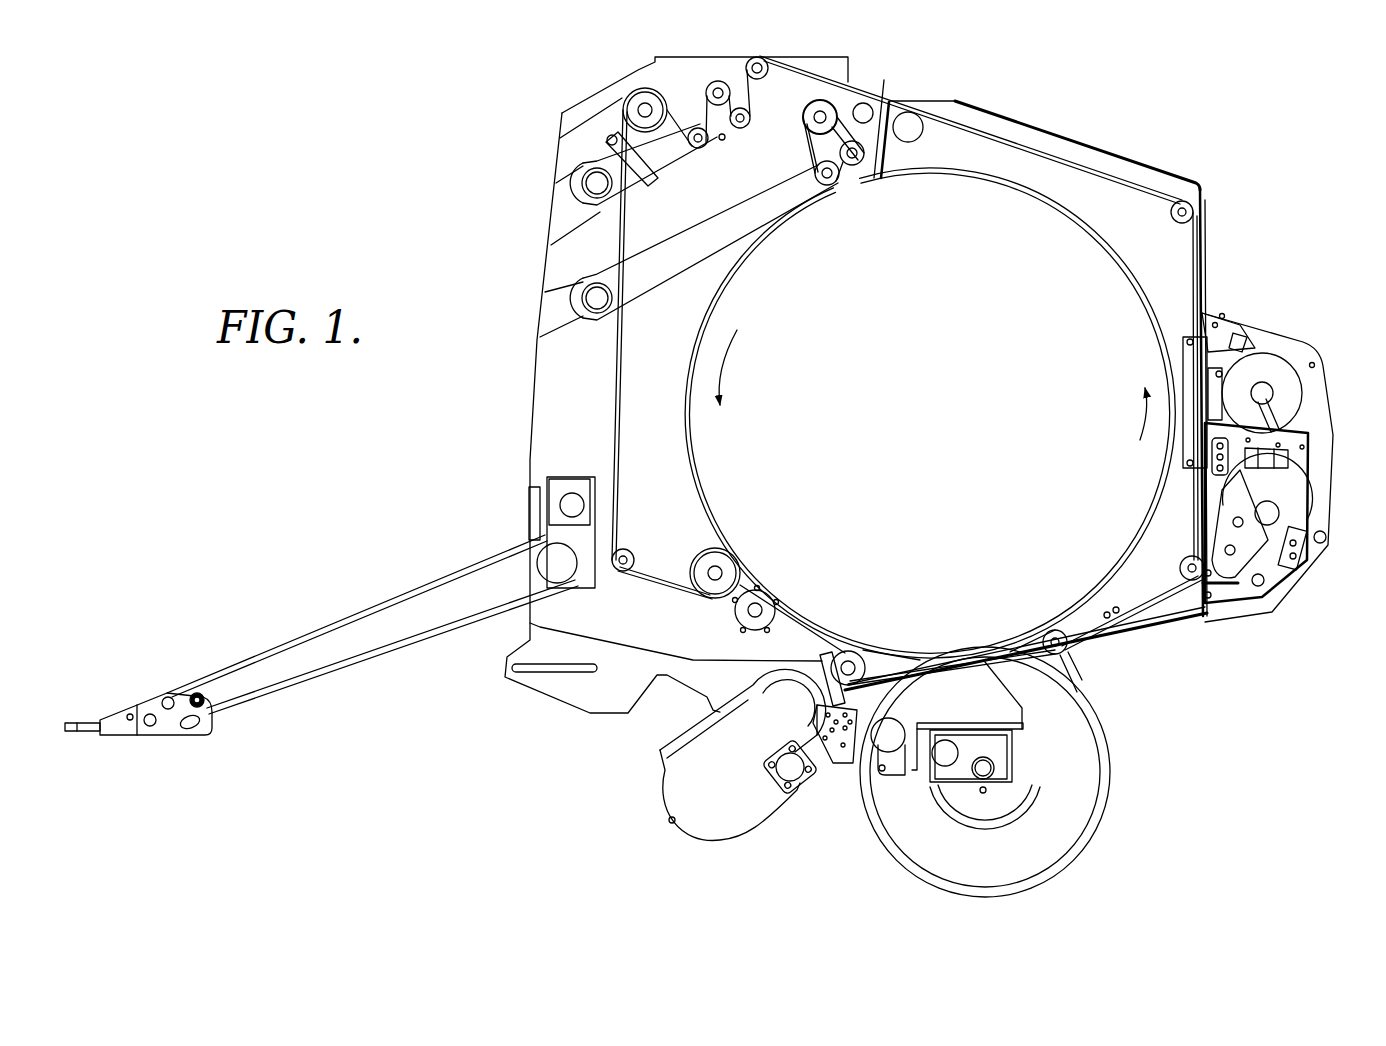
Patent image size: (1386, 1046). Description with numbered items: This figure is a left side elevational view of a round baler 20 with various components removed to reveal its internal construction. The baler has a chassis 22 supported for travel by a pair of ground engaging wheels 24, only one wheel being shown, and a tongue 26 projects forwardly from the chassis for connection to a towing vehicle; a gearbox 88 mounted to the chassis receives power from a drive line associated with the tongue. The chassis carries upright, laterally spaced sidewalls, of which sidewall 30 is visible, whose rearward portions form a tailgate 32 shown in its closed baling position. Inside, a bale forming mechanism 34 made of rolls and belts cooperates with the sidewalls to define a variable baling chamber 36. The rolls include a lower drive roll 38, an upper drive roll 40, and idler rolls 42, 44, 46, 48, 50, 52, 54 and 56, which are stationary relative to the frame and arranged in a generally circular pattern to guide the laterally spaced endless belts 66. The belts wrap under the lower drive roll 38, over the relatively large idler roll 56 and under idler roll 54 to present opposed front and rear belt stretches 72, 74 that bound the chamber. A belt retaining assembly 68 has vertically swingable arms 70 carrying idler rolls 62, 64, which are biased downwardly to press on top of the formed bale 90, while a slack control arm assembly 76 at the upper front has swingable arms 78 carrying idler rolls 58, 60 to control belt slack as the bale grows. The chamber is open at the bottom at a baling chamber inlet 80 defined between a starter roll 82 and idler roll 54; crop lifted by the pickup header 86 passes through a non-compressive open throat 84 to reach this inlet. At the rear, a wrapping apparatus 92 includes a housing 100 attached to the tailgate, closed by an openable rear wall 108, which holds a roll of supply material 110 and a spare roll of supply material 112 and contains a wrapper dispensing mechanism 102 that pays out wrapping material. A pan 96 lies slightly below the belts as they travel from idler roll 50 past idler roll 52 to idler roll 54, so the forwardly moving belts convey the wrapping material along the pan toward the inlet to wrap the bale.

The round baler 20 is at (498, 196).
The chassis 22 is at (890, 780).
The ground engaging wheel 24 is at (1072, 810).
The tongue 26 is at (327, 652).
The sidewall 30 is at (1013, 155).
The tailgate 32 is at (1182, 160).
The bale forming mechanism 34 is at (1160, 276).
The baling chamber 36 is at (727, 451).
The lower drive roll 38 is at (723, 560).
The upper drive roll 40 is at (640, 102).
The idler roll 42 is at (627, 550).
The idler roll 44 is at (716, 90).
The idler roll 46 is at (762, 73).
The idler roll 48 is at (1193, 200).
The idler roll 50 is at (1185, 583).
The idler roll 52 is at (1063, 654).
The idler roll 54 is at (858, 652).
The idler roll 56 is at (822, 115).
The idler roll 58 is at (700, 140).
The idler roll 60 is at (747, 128).
The idler roll 62 is at (857, 160).
The idler roll 64 is at (827, 185).
The endless belts 66 is at (1026, 198).
The belt retaining assembly 68 is at (744, 246).
The swingable arm 70 is at (695, 255).
The front belt stretch 72 is at (692, 350).
The rear belt stretch 74 is at (1157, 327).
The slack control arm assembly 76 is at (660, 150).
The swingable arm 78 is at (678, 170).
The baling chamber inlet 80 is at (841, 630).
The starter roll 82 is at (767, 603).
The open throat 84 is at (790, 628).
The pickup header 86 is at (648, 805).
The gearbox 88 is at (568, 505).
The bale 90 is at (942, 418).
The wrapping apparatus 92 is at (1328, 358).
The pan 96 is at (1135, 617).
The housing 100 is at (1317, 580).
The wrapper dispensing mechanism 102 is at (1289, 606).
The rear wall 108 is at (1322, 335).
The roll of supply material 110 is at (1273, 498).
The spare roll of supply material 112 is at (1275, 403).